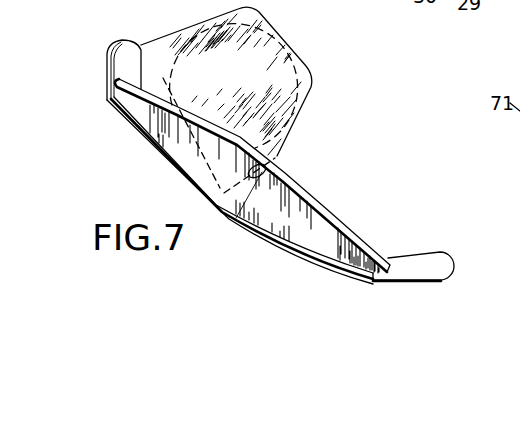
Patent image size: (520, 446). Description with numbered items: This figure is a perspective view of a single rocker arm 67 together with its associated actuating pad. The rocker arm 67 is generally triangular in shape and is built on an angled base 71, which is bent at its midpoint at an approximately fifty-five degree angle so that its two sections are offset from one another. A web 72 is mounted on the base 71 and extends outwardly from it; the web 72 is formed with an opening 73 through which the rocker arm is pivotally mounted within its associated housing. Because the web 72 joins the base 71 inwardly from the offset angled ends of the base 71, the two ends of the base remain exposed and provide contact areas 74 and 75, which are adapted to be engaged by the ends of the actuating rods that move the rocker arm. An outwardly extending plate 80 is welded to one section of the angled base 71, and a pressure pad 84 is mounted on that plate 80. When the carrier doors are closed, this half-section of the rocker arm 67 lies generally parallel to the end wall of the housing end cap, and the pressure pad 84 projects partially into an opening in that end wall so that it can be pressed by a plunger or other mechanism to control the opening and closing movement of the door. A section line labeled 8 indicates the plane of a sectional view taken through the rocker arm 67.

The section line 8- 8 is at (294, 42).
The rocker arm 67 is at (256, 244).
The angled base 71 is at (288, 240).
The web 72 is at (298, 205).
The opening 73 is at (266, 169).
The contact area 74 is at (440, 262).
The contact area 75 is at (125, 48).
The plate 80 is at (313, 80).
The pressure pad 84 is at (305, 62).